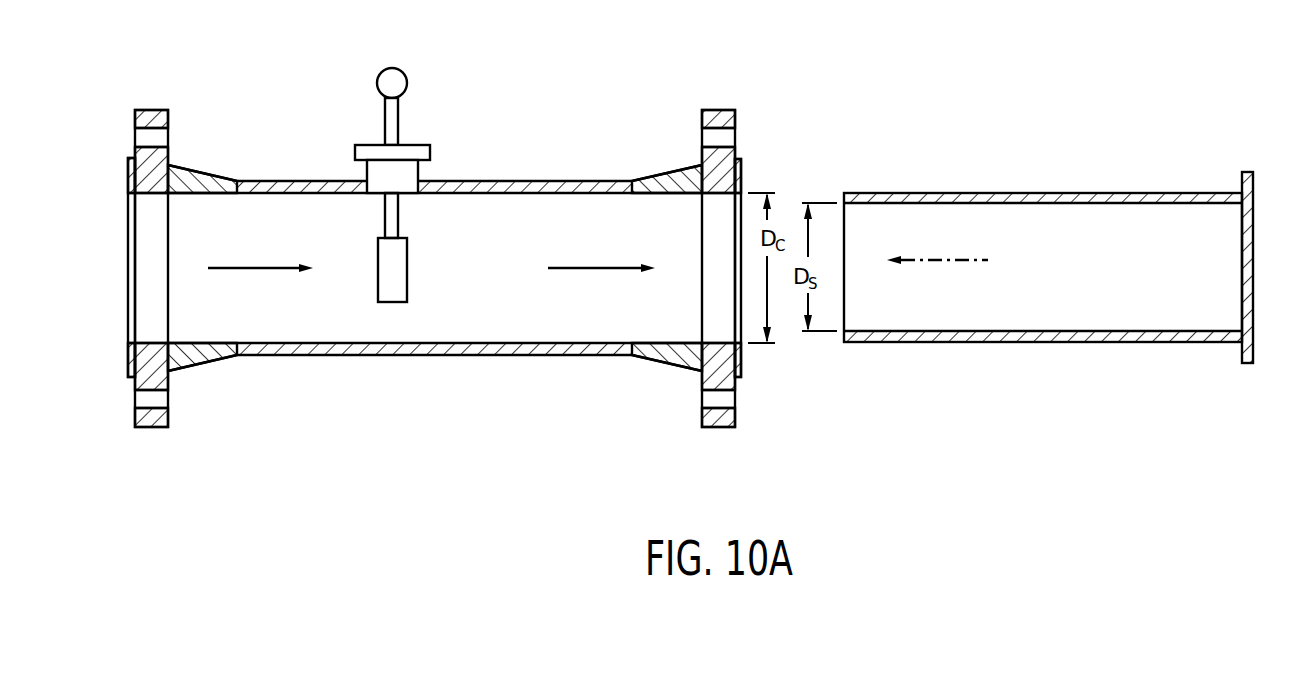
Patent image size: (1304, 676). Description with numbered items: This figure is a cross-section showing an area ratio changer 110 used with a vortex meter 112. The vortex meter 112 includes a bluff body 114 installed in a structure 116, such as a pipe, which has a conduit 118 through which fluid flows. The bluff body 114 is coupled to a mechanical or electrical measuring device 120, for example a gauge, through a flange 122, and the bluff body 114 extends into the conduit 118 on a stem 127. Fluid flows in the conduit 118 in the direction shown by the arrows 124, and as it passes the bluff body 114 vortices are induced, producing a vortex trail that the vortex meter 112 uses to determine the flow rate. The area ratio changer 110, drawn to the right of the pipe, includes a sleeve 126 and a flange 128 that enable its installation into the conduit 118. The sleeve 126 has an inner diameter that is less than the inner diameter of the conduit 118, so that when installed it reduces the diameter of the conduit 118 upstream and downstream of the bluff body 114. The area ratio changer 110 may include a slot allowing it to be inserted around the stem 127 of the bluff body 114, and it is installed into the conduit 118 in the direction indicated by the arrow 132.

The area ratio changer 110 is at (1048, 225).
The vortex meter 112 is at (476, 228).
The bluff body 114 is at (407, 272).
The structure 116 is at (457, 357).
The conduit 118 is at (684, 296).
The measuring device 120 is at (407, 85).
The flange 122 is at (420, 142).
The arrows 124 is at (253, 266).
The sleeve 126 is at (1100, 193).
The stem 127 is at (398, 212).
The flange 128 is at (1240, 188).
The arrow 132 is at (945, 260).